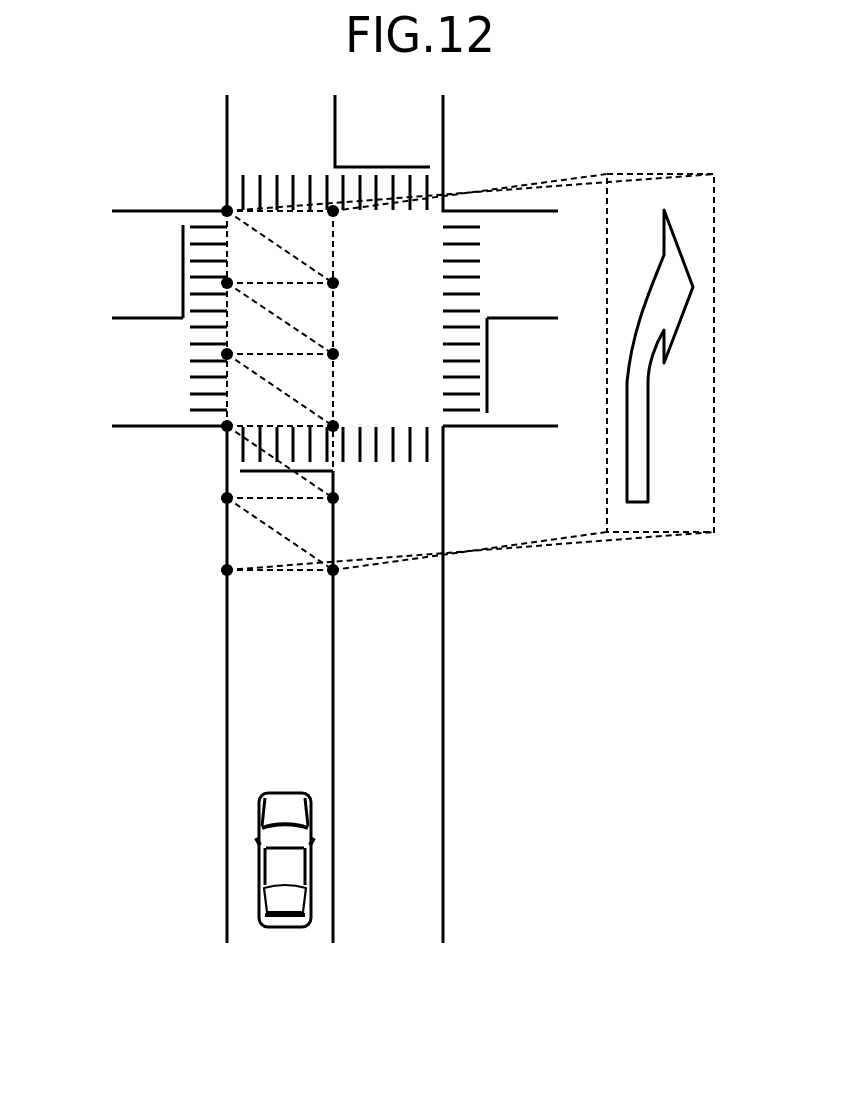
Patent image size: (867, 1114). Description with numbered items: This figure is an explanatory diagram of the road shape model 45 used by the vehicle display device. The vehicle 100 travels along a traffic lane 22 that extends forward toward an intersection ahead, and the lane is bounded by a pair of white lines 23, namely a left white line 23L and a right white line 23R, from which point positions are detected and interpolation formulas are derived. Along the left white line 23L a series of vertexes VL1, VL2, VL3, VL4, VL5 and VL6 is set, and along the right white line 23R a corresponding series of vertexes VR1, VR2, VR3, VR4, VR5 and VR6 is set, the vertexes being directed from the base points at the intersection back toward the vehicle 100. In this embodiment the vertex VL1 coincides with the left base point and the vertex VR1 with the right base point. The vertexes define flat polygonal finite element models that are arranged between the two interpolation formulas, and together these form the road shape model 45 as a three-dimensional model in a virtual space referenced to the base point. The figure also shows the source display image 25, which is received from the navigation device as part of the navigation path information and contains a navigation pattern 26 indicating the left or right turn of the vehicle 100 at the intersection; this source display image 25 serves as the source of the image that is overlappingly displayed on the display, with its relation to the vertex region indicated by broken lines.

The road shape model 45 is at (198, 140).
The vertex VL1 is at (227, 211).
The vertex VL2 is at (227, 283).
The vertex VL3 is at (227, 354).
The vertex VL4 is at (227, 426).
The vertex VL5 is at (227, 498).
The vertex VL6 is at (227, 570).
The vertex VR1 is at (333, 211).
The vertex VR2 is at (333, 283).
The vertex VR3 is at (333, 354).
The vertex VR4 is at (333, 426).
The vertex VR5 is at (333, 498).
The vertex VR6 is at (333, 570).
The source display image 25 is at (716, 198).
The navigation pattern 26 is at (690, 268).
The traffic lane 22 is at (262, 697).
The white lines 23 is at (333, 684).
The left white line 23L is at (227, 906).
The right white line 23R is at (334, 866).
The vehicle 100 is at (262, 830).